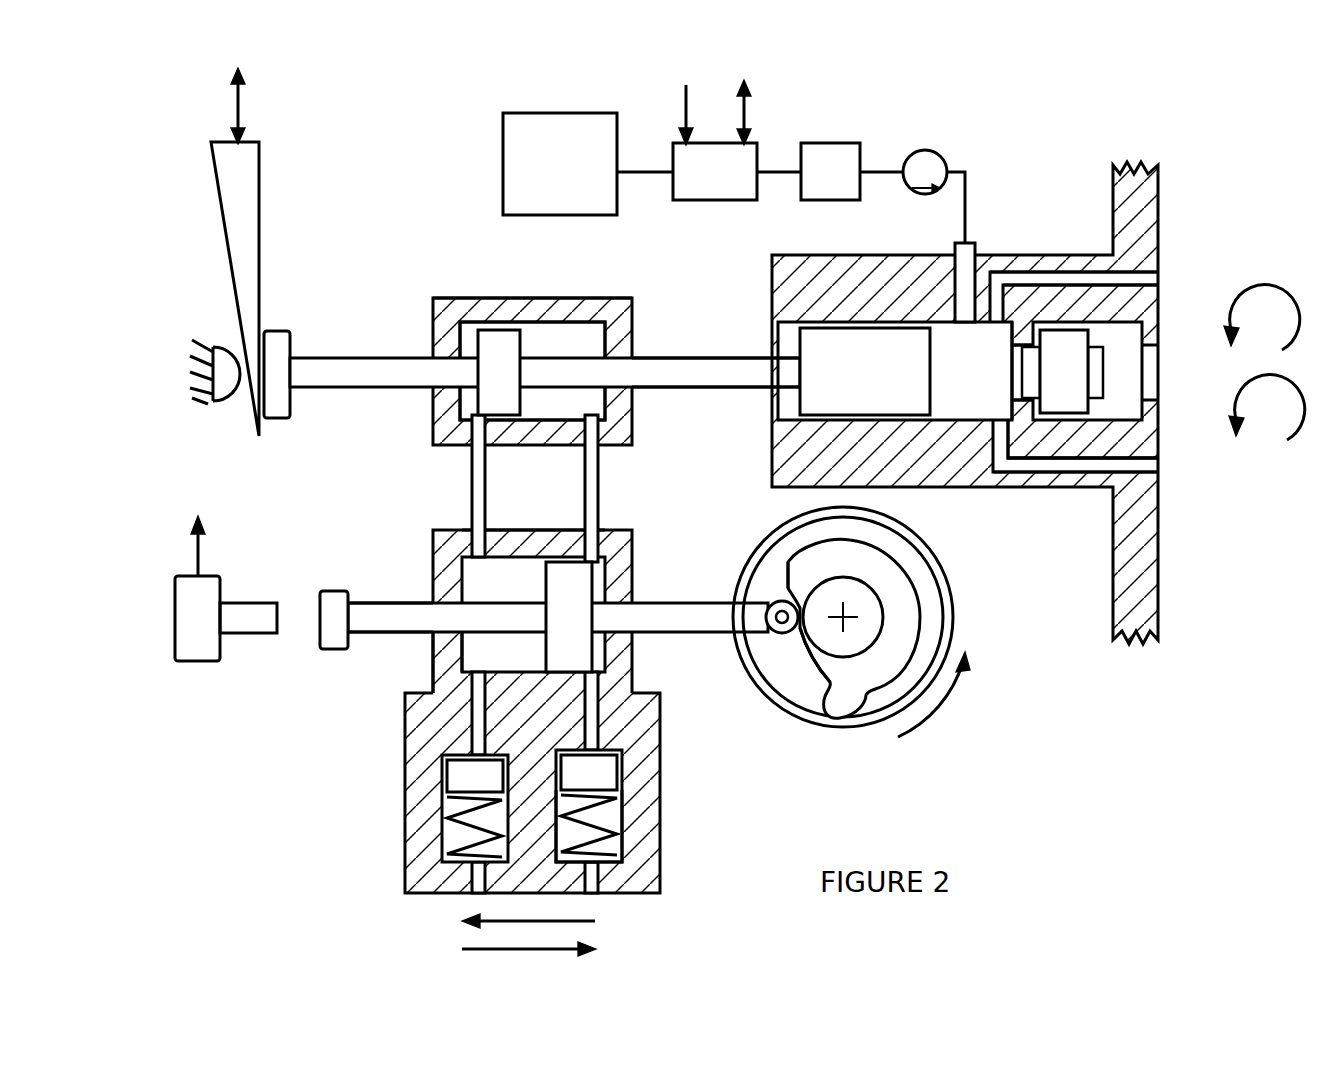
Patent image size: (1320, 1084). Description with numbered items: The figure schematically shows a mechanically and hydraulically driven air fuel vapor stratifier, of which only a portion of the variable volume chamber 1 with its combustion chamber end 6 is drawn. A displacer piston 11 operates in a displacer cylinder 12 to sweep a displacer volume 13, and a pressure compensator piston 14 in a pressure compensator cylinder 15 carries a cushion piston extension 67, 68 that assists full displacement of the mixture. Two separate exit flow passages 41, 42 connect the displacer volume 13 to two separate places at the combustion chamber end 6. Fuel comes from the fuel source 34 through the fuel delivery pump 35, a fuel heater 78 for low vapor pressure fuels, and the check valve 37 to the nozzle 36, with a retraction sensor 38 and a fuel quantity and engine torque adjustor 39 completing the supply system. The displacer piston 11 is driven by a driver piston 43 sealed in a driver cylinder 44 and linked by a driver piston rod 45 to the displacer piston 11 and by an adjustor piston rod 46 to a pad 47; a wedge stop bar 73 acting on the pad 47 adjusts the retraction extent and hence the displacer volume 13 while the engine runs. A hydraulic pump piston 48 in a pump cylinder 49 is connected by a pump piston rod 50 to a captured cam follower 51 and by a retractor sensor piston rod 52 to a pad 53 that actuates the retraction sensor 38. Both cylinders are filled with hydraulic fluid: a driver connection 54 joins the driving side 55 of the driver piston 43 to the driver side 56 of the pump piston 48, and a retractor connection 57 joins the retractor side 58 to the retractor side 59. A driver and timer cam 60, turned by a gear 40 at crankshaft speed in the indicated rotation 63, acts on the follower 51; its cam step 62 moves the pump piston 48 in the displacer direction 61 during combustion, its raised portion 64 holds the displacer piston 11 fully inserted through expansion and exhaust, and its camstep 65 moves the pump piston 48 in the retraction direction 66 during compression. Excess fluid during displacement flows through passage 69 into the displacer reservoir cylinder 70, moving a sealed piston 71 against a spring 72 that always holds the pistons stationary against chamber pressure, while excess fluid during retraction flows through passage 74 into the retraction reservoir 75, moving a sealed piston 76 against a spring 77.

The variable volume chamber 1 is at (1267, 407).
The combustion chamber end 6 is at (1262, 317).
The displacer piston 11 is at (890, 350).
The displacer cylinder 12 is at (796, 302).
The displacer volume 13 is at (952, 342).
The pressure compensator piston 14 is at (1062, 345).
The pressure compensator cylinder 15 is at (1066, 440).
The fuel source 34 is at (506, 145).
The fuel delivery pump 35 is at (745, 175).
The nozzle 36 is at (966, 270).
The check valve 37 is at (944, 165).
The retraction sensor 38 is at (196, 632).
The fuel quantity and engine torque adjustor 39 is at (240, 100).
The gear 40 is at (882, 725).
The exit flow passage 41 is at (1030, 290).
The exit flow passage 42 is at (1060, 470).
The driver piston 43 is at (495, 342).
The driver cylinder 44 is at (552, 300).
The driver piston rod 45 is at (742, 372).
The adjustor piston rod 46 is at (396, 362).
The pad 47 is at (282, 345).
The hydraulic pump piston 48 is at (615, 548).
The pump cylinder 49 is at (505, 537).
The pump piston rod 50 is at (682, 604).
The captured cam follower 51 is at (780, 628).
The retractor sensor piston rod 52 is at (400, 604).
The pad 53 is at (334, 600).
The driver connection 54 is at (472, 468).
The driving side 55 is at (500, 348).
The driver side 56 is at (470, 655).
The retractor connection 57 is at (592, 490).
The retractor side 58 is at (530, 348).
The retractor side 59 is at (598, 657).
The driver and timer cam 60 is at (870, 700).
The displacer direction 61 is at (509, 921).
The cam step 62 is at (778, 582).
The rotation 63 is at (964, 694).
The raised portion 64 is at (890, 548).
The camstep 65 is at (838, 682).
The retraction direction 66 is at (544, 949).
The cushion piston extension 67 is at (1014, 380).
The cushion piston extension 68 is at (1105, 352).
The passage 69 is at (470, 710).
The displacer reservoir cylinder 70 is at (440, 820).
The sealed piston 71 is at (470, 780).
The spring 72 is at (470, 840).
The wedge stop bar 73 is at (245, 205).
The passage 74 is at (592, 720).
The retraction reservoir 75 is at (615, 812).
The sealed piston 76 is at (600, 776).
The spring 77 is at (615, 850).
The fuel heater 78 is at (835, 165).